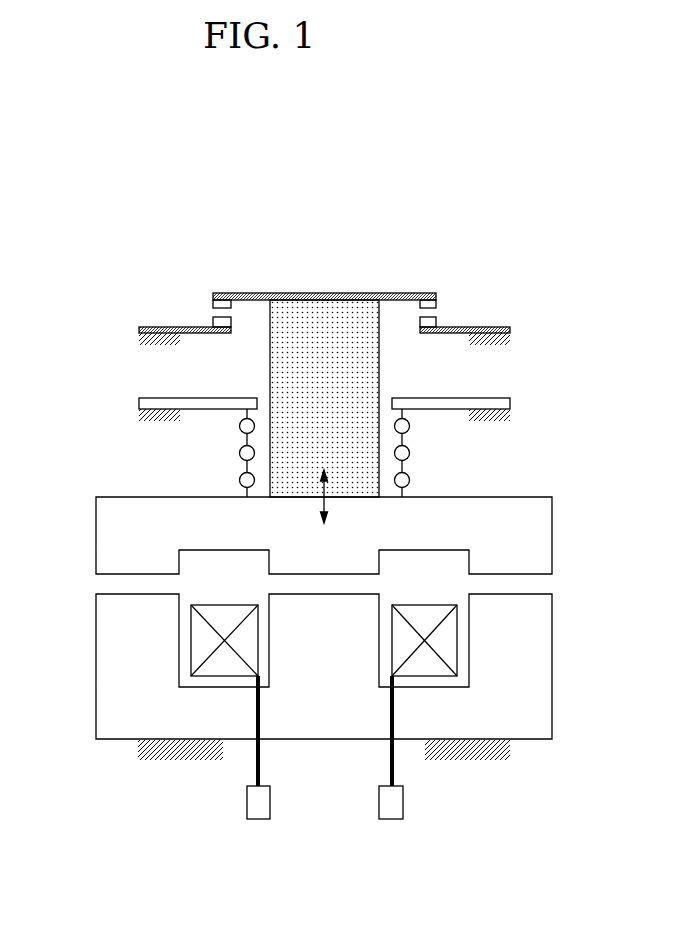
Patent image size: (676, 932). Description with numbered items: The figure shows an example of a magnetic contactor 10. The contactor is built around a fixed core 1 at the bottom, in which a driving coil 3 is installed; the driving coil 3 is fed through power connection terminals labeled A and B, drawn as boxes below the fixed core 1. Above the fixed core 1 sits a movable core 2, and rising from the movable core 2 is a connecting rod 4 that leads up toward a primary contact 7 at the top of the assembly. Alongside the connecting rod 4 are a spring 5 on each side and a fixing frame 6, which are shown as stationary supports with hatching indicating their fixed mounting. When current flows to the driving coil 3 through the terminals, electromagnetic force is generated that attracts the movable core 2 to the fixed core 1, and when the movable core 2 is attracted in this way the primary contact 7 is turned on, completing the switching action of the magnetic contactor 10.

The magnetic contactor 10 is at (412, 191).
The fixed core 1 is at (86, 709).
The movable core 2 is at (86, 556).
The driving coil 3 is at (182, 642).
The connecting rod 4 is at (392, 365).
The spring 5 is at (426, 454).
The fixing frame 6 is at (128, 398).
The primary contact 7 is at (199, 306).